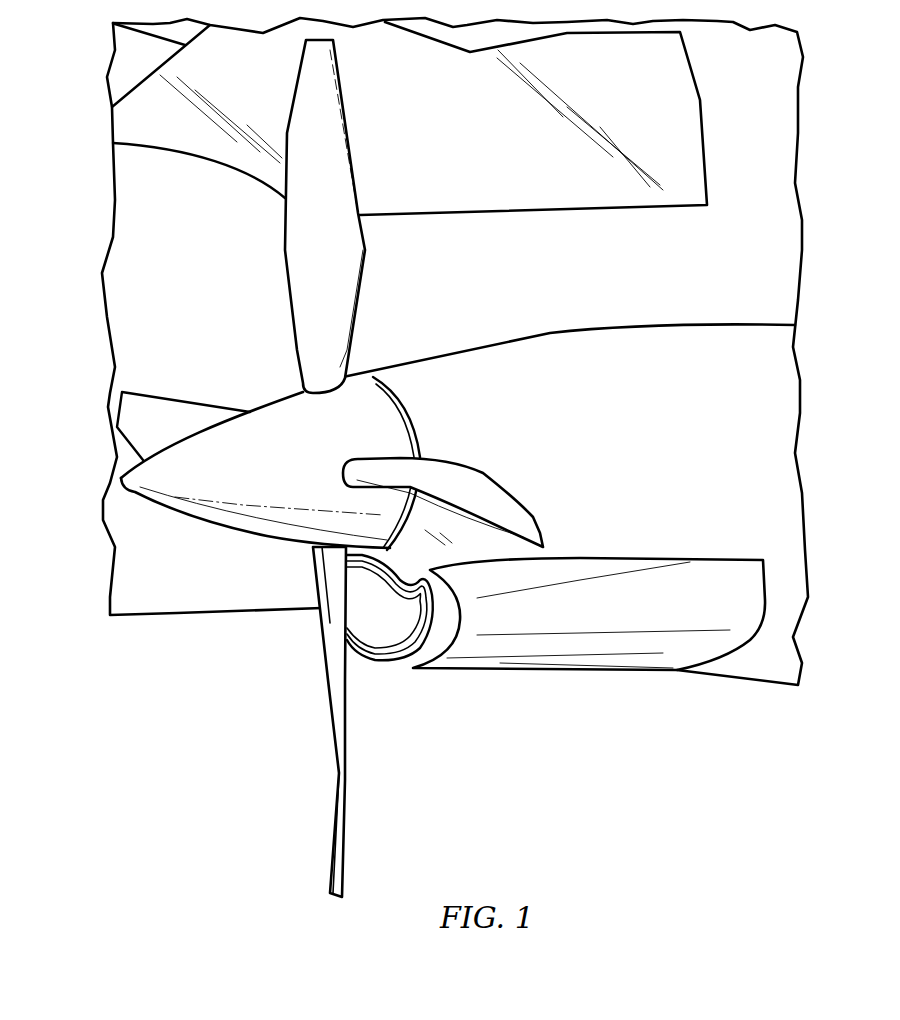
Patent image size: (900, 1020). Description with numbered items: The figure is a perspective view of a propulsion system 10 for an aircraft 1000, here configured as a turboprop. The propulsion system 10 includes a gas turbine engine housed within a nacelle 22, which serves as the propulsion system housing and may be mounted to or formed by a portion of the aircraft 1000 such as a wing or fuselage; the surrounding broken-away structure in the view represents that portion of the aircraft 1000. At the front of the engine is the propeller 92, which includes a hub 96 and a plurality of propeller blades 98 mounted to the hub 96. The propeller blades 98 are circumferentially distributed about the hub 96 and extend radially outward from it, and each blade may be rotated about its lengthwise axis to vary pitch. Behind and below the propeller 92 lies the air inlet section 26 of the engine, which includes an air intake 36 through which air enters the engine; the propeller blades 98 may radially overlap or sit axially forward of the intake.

The aircraft 1000 is at (766, 165).
The propulsion system 10 is at (246, 364).
The nacelle 22 is at (738, 377).
The air inlet section 26 is at (589, 678).
The air intake 36 is at (507, 647).
The propeller 92 is at (234, 538).
The hub 96 is at (273, 510).
The propeller blades 98 is at (343, 330).